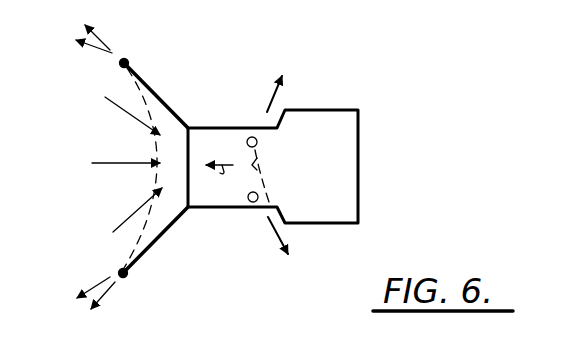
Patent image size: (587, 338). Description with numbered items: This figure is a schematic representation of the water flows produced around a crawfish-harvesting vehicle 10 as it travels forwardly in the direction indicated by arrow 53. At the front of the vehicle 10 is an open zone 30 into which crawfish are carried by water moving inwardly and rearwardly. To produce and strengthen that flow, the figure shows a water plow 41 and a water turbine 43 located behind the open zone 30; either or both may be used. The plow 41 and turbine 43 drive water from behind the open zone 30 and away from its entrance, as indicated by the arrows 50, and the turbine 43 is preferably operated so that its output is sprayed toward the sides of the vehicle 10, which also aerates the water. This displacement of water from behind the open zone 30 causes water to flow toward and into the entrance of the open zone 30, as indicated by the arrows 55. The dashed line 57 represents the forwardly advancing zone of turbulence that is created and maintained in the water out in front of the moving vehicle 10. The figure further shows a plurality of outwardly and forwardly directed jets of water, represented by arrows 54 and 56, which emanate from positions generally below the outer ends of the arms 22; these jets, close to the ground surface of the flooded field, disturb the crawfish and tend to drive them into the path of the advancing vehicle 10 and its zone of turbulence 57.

The vehicle 10 is at (385, 152).
The arms 22 is at (166, 78).
The open zone 30 is at (198, 148).
The water plow 41 is at (258, 165).
The water turbine 43 is at (257, 142).
The arrows indicating water driven away from open zone 50 is at (278, 98).
The arrow indicating forward travel 53 is at (218, 183).
The arrows representing water jets 54 is at (110, 55).
The arrows indicating inward water flow 55 is at (127, 160).
The arrows representing water jets 56 is at (98, 34).
The zone of turbulence 57 is at (168, 97).